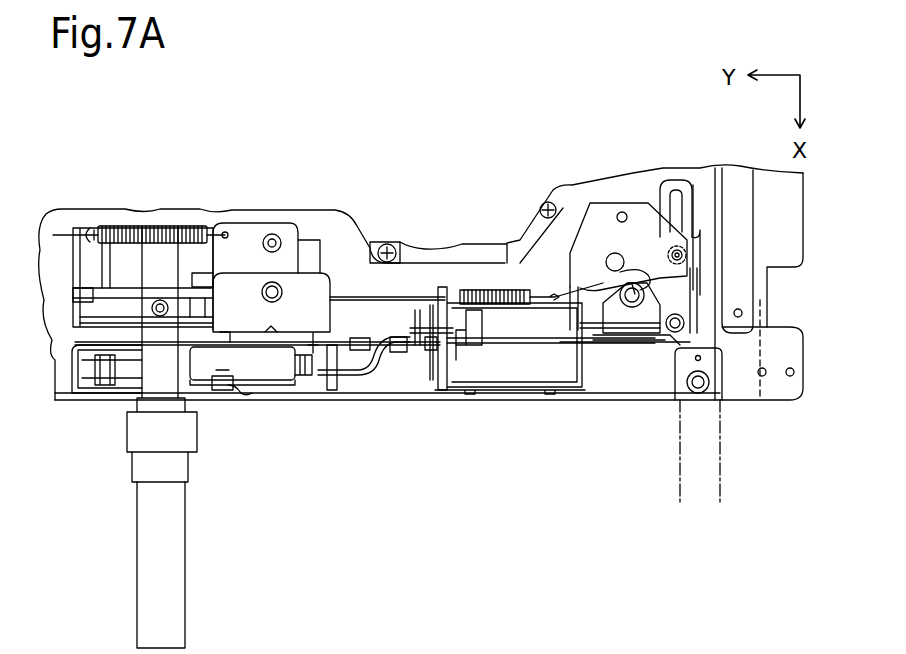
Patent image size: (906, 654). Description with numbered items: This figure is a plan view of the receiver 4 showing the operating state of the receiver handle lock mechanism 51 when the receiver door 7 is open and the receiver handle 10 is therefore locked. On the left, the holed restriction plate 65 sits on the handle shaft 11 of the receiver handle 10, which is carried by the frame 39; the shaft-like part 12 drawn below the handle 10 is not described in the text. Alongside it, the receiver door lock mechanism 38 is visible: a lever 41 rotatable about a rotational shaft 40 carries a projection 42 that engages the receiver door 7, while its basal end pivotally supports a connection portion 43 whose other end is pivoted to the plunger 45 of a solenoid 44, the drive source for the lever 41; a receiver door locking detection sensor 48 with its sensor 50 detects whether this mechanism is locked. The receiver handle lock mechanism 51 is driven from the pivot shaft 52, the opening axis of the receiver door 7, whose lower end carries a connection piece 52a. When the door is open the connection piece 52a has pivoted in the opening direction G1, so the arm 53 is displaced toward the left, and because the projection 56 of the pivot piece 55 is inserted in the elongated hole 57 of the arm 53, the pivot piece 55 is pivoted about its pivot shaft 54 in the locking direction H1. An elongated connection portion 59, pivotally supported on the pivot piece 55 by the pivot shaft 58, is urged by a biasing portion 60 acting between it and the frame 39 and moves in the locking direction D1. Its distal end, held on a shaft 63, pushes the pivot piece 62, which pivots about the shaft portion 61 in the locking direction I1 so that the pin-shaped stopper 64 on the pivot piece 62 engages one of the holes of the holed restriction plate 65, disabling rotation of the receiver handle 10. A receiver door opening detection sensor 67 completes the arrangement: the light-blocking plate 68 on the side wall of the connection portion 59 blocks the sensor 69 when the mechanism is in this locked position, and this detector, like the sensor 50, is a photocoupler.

The receiver 4 is at (70, 404).
The receiver door 7 is at (720, 472).
The receiver handle 10 is at (127, 438).
The handle shaft 11 is at (146, 218).
The shaft 12 is at (142, 565).
The receiver door lock mechanism 38 is at (289, 403).
The frame 39 is at (66, 346).
The rotational shaft 40 is at (97, 388).
The lever 41 is at (78, 372).
The projection 42 is at (258, 388).
The connection portion 43 is at (350, 378).
The solenoid 44 is at (515, 372).
The plunger 45 is at (425, 352).
The receiver door locking detection sensor 48 is at (235, 398).
The sensor 50 is at (220, 390).
The receiver handle lock mechanism 51 is at (199, 260).
The pivot shaft 52 is at (700, 400).
The connection piece 52a is at (672, 380).
The arm 53 is at (667, 197).
The pivot shaft 54 is at (668, 256).
The pivot piece 55 is at (580, 228).
The projection 56 is at (690, 246).
The elongated hole 57 is at (685, 220).
The pivot shaft 58 is at (621, 212).
The connection portion 59 is at (432, 270).
The biasing portion 60 is at (505, 290).
The shaft portion 61 is at (280, 300).
The pivot piece 62 is at (302, 248).
The shaft 63 is at (274, 235).
The stopper 64 is at (205, 292).
The holed restriction plate 65 is at (133, 290).
The receiver door opening detection sensor 67 is at (464, 370).
The light-blocking plate 68 is at (490, 320).
The sensor 69 is at (480, 345).
The locking direction D1 is at (376, 230).
The opening direction G1 is at (668, 387).
The locking direction H1 is at (622, 248).
The locking direction I1 is at (256, 227).